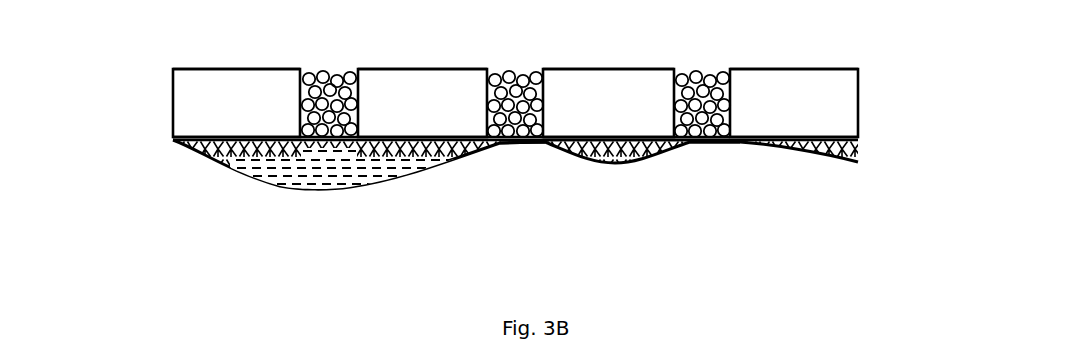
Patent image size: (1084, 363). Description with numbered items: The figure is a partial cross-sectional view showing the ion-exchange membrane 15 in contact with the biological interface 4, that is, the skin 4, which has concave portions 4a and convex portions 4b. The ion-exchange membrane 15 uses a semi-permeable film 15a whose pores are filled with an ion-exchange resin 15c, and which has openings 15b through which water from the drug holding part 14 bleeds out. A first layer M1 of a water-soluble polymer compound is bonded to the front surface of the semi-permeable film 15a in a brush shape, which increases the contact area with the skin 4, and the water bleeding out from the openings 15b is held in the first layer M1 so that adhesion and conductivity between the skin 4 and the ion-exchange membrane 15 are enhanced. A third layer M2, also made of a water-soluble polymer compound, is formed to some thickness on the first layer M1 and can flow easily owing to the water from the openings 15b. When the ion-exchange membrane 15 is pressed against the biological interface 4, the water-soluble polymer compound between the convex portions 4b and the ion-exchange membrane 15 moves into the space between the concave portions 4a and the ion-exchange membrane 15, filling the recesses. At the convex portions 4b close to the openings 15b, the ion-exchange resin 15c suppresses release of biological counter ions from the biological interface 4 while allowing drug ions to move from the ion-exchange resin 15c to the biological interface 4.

The drug holding part 14 is at (149, 38).
The ion-exchange membrane 15 is at (149, 113).
The semi-permeable film 15a is at (593, 80).
The openings 15b is at (680, 143).
The ion-exchange resin 15c is at (695, 75).
The biological interface 4 is at (149, 168).
The concave portions 4a is at (308, 193).
The convex portions 4b is at (524, 150).
The first layer M1 is at (858, 145).
The third layer M2 is at (343, 168).